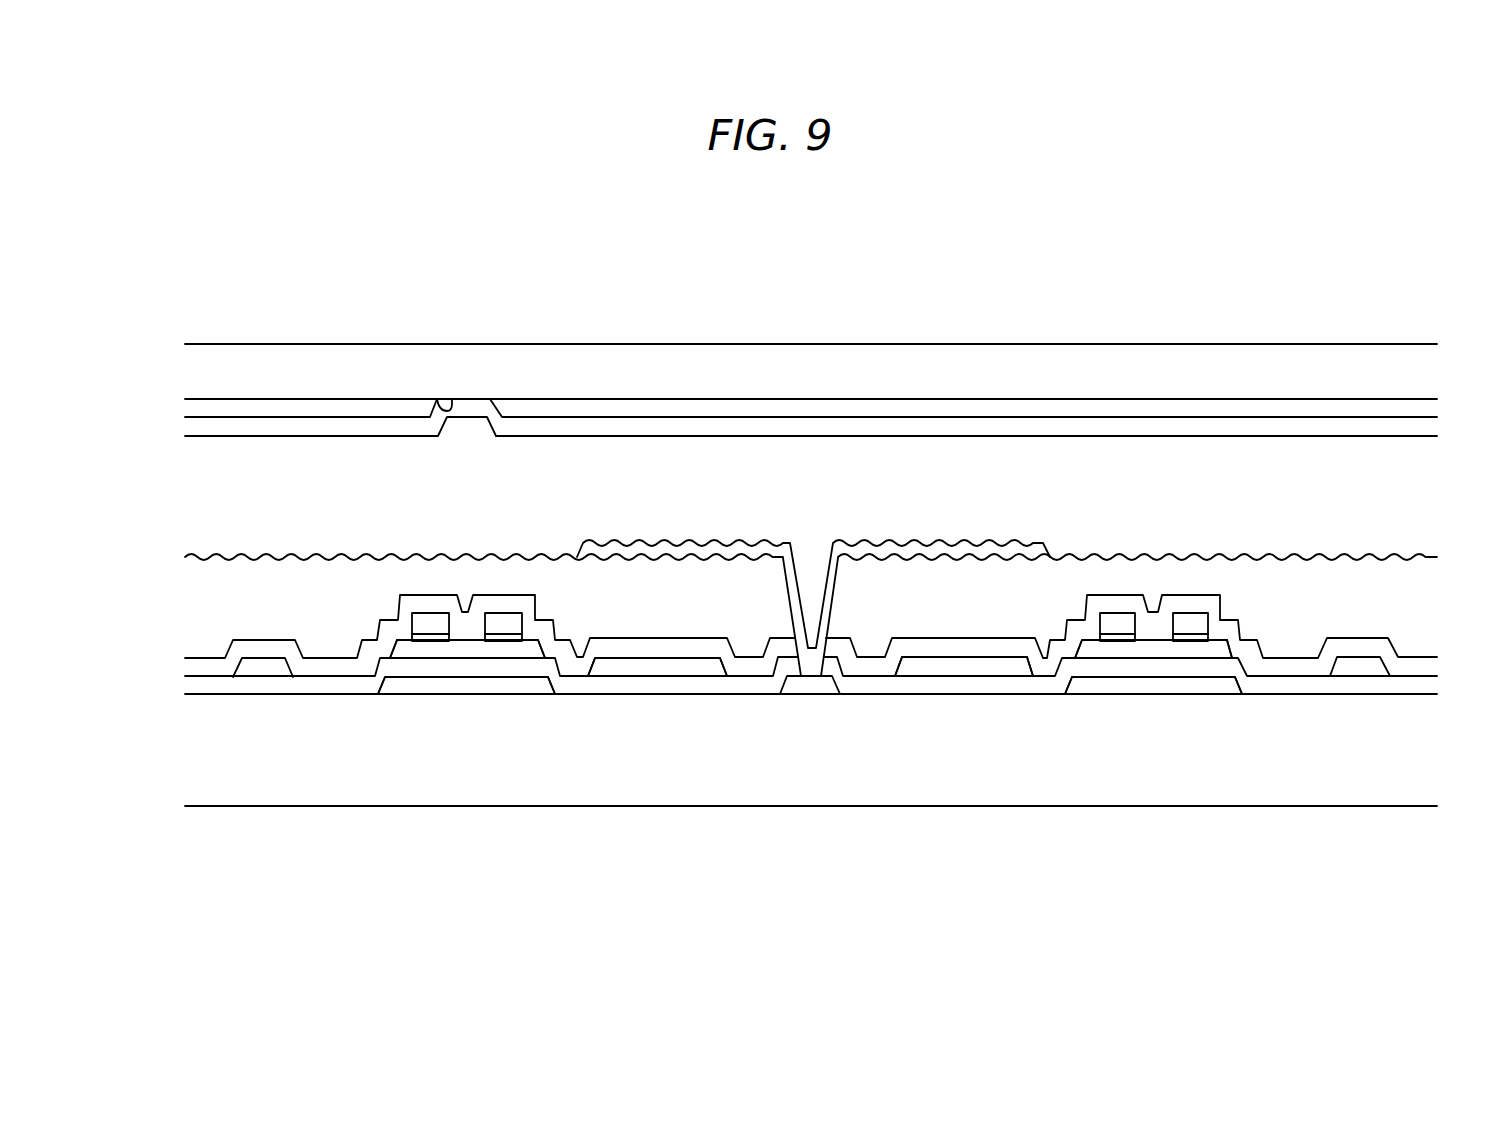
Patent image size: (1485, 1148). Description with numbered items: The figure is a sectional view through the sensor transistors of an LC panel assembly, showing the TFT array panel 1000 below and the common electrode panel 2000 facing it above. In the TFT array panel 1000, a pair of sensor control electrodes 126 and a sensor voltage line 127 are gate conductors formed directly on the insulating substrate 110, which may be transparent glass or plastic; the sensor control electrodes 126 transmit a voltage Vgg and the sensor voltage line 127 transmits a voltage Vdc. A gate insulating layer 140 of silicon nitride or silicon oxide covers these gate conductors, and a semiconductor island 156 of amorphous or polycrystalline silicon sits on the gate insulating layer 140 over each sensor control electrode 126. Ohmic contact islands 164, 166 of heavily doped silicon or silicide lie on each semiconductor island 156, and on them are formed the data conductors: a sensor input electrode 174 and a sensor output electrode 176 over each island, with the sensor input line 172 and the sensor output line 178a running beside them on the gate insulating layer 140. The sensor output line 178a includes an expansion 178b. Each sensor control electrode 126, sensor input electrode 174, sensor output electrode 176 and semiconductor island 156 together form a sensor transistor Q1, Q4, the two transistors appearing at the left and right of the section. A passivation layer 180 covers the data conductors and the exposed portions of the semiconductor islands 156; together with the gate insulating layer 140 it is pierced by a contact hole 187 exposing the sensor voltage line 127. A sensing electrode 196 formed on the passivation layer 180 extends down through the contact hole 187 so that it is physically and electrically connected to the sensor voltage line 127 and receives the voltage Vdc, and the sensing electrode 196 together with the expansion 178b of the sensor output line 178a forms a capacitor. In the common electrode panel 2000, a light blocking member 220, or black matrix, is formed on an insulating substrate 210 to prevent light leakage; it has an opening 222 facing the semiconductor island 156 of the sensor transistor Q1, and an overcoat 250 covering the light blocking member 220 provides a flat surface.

The common electrode panel 2000 is at (199, 324).
The TFT array panel 1000 is at (199, 824).
The insulating substrate 210 is at (890, 355).
The light blocking member 220 is at (330, 410).
The opening 222 is at (437, 408).
The overcoat 250 is at (993, 430).
The insulating substrate 110 is at (780, 780).
The sensor control electrode 126 is at (481, 686).
The sensor voltage line 127 is at (813, 683).
The gate insulating layer 140 is at (735, 687).
The semiconductor island 156 is at (463, 650).
The ohmic contact island 164 is at (425, 636).
The ohmic contact island 166 is at (507, 636).
The sensor input line 172 is at (258, 672).
The sensor input electrode 174 is at (435, 622).
The sensor output electrode 176 is at (498, 622).
The sensor output line 178a is at (603, 670).
The expansion 178b is at (708, 668).
The passivation layer 180 is at (205, 665).
The contact hole 187 is at (809, 551).
The sensing electrode 196 is at (700, 548).
The sensor transistor Q1 is at (468, 587).
The sensor transistor Q4 is at (1157, 587).